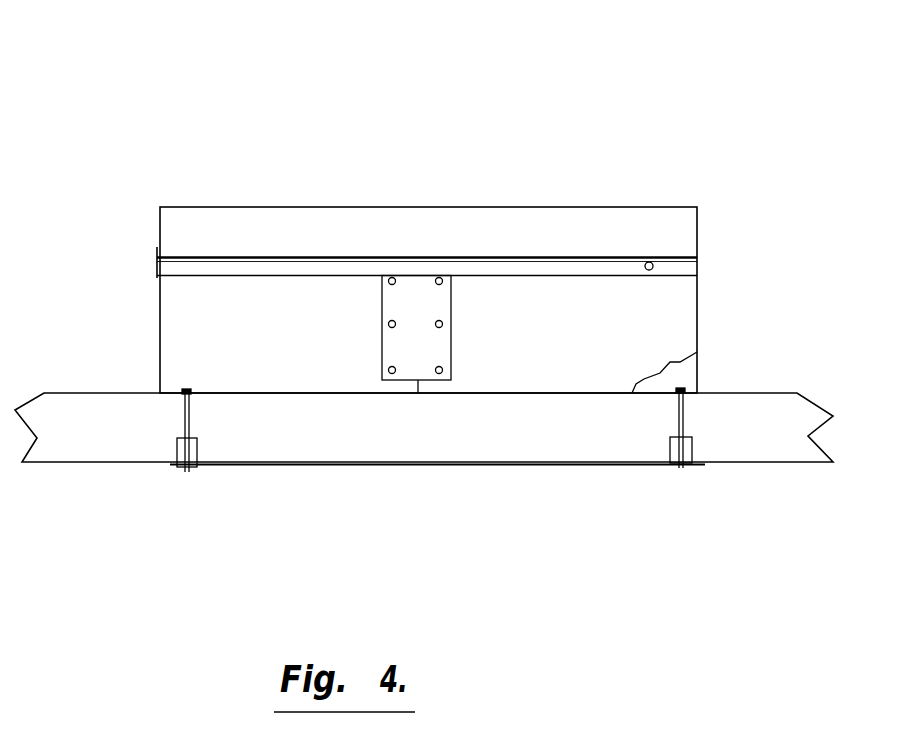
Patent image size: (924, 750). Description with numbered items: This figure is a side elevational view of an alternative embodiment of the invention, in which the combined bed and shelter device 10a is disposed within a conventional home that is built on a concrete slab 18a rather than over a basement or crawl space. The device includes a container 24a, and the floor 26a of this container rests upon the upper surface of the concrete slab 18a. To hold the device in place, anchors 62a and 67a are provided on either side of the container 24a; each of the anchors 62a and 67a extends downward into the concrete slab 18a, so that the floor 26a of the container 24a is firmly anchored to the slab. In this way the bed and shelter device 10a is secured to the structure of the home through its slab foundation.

The combined bed and shelter device 10a is at (186, 150).
The concrete slab 18a is at (325, 441).
The container 24a is at (592, 337).
The floor 26a is at (508, 390).
The anchor 62a is at (185, 422).
The anchor 67a is at (683, 417).